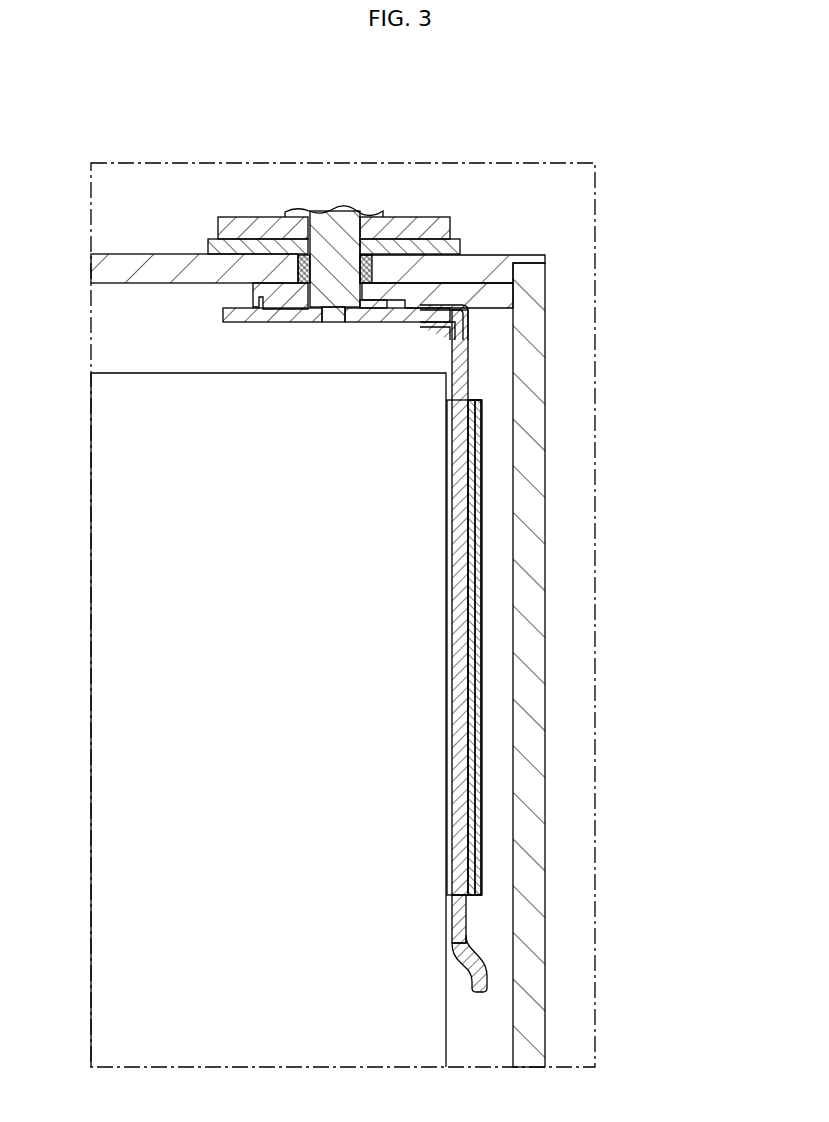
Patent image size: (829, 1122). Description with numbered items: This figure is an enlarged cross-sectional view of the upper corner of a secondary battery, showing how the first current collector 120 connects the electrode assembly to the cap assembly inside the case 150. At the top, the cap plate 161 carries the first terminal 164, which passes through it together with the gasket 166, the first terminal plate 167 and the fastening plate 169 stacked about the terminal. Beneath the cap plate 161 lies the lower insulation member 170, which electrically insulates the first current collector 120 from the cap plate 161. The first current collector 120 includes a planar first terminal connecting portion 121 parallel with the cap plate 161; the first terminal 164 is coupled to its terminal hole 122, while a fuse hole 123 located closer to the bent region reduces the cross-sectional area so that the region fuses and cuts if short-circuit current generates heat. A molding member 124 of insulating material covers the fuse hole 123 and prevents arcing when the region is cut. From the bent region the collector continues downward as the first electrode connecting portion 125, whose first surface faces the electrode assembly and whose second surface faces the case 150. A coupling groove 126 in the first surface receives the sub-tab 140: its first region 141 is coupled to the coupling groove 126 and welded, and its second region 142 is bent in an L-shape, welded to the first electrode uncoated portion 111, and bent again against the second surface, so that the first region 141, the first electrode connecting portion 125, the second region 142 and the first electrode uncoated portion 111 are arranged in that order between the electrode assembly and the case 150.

The first electrode uncoated portion 111 is at (484, 600).
The first current collector 120 is at (470, 363).
The first terminal connecting portion 121 is at (255, 323).
The terminal hole 122 is at (338, 324).
The fuse hole 123 is at (442, 325).
The molding member 124 is at (450, 340).
The first electrode connecting portion 125 is at (462, 930).
The coupling groove 126 is at (453, 878).
The sub-tab 140 is at (675, 708).
The first region 141 is at (482, 712).
The second region 142 is at (482, 762).
The case 150 is at (535, 460).
The cap plate 161 is at (481, 262).
The first terminal 164 is at (334, 262).
The gasket 166 is at (398, 250).
The first terminal plate 167 is at (257, 226).
The fastening plate 169 is at (208, 248).
The lower insulation member 170 is at (505, 297).